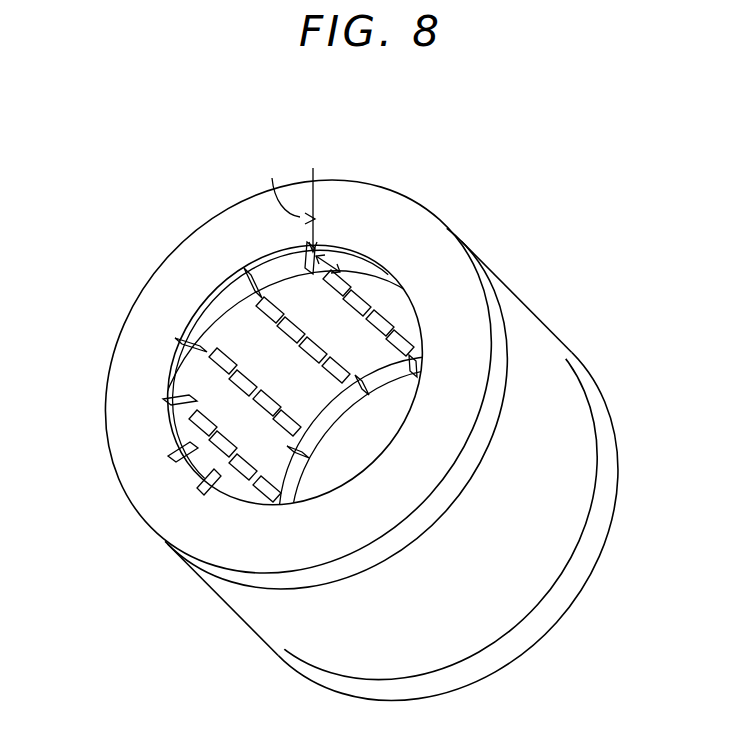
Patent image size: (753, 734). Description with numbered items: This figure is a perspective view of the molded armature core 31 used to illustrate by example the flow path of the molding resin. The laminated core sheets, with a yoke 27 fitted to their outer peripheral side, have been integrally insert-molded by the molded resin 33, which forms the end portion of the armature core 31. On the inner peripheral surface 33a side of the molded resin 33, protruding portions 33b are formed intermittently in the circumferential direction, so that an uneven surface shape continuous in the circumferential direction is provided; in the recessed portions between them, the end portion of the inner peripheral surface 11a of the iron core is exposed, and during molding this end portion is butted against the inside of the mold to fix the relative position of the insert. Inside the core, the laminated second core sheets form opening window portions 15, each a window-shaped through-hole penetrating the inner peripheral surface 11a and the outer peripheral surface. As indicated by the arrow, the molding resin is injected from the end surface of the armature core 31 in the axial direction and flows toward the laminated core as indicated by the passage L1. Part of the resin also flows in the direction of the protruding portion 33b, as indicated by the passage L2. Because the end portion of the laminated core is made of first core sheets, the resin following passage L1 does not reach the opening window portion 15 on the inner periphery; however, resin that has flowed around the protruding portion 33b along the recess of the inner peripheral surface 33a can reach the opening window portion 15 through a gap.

The armature core 31 is at (582, 187).
The yoke 27 is at (533, 354).
The molded resin 33 is at (103, 408).
The inner peripheral surface 33a is at (186, 378).
The protruding portion 33b is at (212, 298).
The opening window portion 15 is at (218, 320).
The inner peripheral surface 11a is at (218, 460).
The passage L1 is at (299, 195).
The passage L2 is at (316, 252).